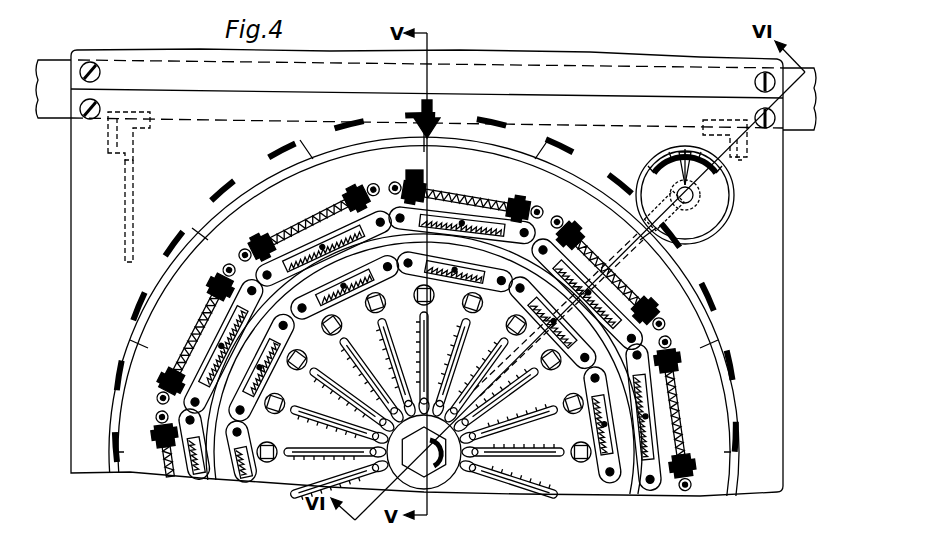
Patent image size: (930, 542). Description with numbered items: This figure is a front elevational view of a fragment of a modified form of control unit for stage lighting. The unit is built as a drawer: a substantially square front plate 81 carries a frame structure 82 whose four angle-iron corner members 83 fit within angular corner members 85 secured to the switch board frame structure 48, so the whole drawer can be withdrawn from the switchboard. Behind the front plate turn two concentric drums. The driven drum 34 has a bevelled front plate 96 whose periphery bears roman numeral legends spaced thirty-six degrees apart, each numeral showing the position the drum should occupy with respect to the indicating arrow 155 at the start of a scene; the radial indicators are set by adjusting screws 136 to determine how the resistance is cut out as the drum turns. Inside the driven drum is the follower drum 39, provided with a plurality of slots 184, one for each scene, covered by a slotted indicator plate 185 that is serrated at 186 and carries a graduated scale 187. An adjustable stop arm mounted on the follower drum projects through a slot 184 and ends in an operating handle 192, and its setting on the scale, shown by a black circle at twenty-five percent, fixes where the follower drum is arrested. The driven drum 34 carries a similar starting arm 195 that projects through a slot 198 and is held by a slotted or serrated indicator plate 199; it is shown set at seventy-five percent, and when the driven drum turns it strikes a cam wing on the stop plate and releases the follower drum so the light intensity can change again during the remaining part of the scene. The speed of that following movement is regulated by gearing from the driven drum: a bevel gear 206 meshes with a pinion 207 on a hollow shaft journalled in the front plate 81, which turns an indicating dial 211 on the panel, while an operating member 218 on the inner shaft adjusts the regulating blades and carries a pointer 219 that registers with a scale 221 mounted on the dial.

The driven drum 34 is at (213, 222).
The follower drum 39 is at (225, 481).
The switch board frame structure 48 is at (56, 118).
The front plate 81 is at (75, 334).
The frame structure 82 is at (106, 256).
The corner members 83 is at (130, 139).
The angular corner members 85 is at (108, 131).
The front plate of the driven drum 96 is at (132, 470).
The adjusting screws 136 is at (420, 300).
The indicating arrow 155 is at (435, 120).
The slots 184 is at (290, 326).
The slotted indicator plate 185 is at (256, 418).
The serrations 186 is at (375, 298).
The graduated scale 187 is at (222, 333).
The operating handle 192 is at (418, 262).
The starting arm 195 is at (490, 205).
The slot 198 is at (428, 184).
The slotted or serrated indicator plate 199 is at (540, 240).
The bevel gear 206 is at (688, 246).
The pinion 207 is at (655, 173).
The indicating dial 211 is at (715, 223).
The operating member 218 is at (702, 197).
The pointer 219 is at (700, 170).
The scale 221 is at (660, 158).